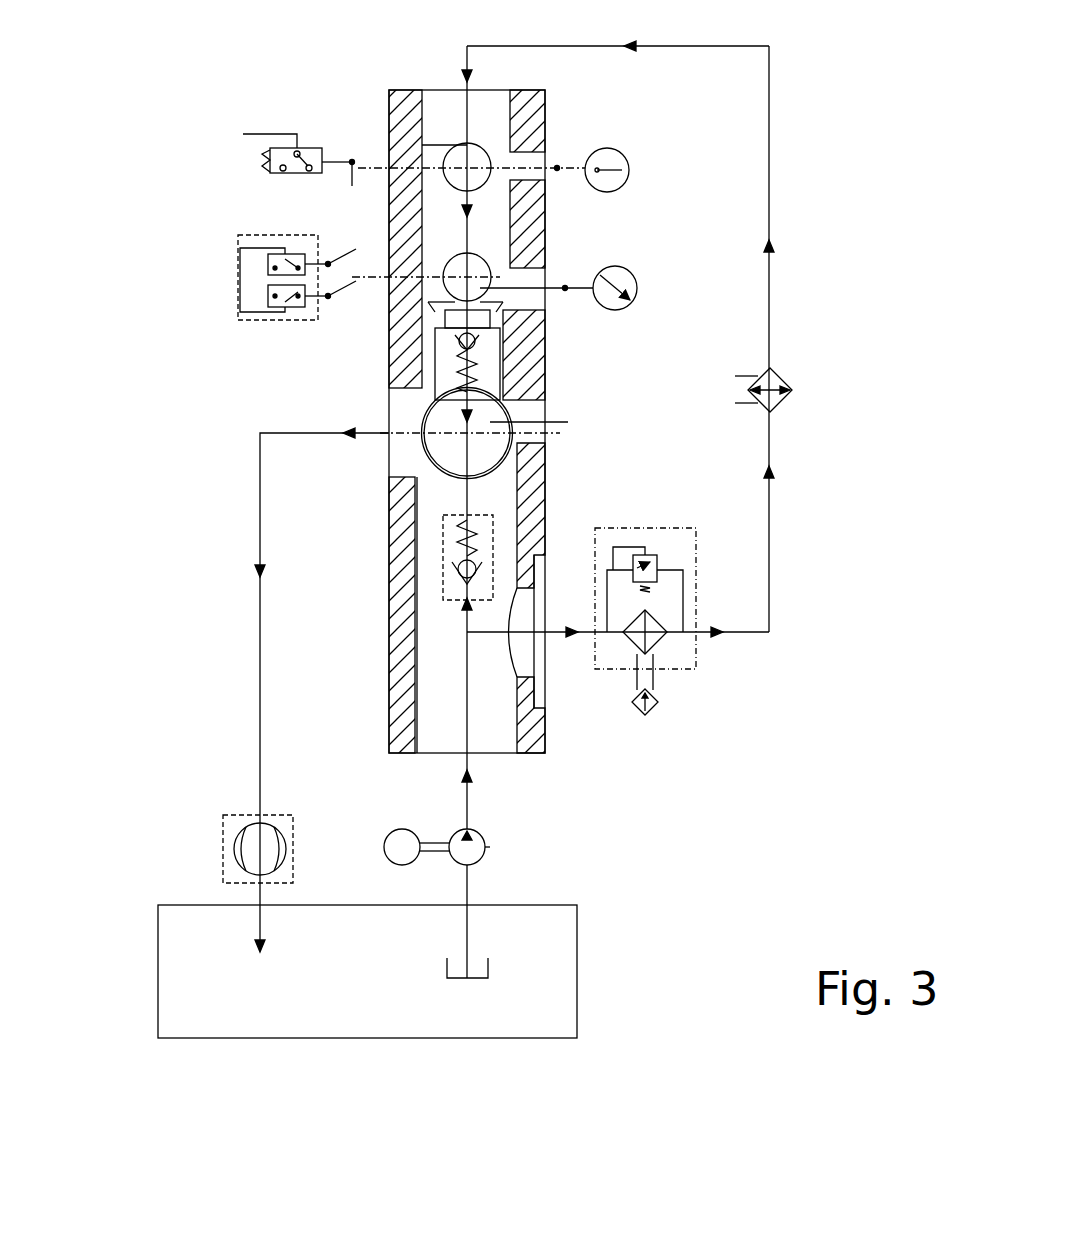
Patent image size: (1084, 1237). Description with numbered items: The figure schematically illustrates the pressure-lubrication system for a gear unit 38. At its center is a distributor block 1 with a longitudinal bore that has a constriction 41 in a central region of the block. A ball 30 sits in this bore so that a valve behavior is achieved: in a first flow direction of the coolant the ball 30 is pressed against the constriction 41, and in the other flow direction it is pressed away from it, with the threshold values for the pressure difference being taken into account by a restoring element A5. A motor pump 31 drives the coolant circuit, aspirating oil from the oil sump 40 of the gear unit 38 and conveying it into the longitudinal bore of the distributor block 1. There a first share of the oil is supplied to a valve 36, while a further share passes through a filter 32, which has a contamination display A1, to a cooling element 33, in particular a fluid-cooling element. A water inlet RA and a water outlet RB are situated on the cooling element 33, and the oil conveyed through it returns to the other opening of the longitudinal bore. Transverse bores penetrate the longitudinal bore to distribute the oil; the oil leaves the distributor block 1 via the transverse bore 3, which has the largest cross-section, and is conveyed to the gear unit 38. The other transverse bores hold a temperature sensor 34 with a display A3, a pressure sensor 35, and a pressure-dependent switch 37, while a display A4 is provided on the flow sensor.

The distributor block 1 is at (400, 102).
The transverse bore 3 is at (389, 450).
The ball 30 is at (484, 455).
The motor pump 31 is at (385, 832).
The filter 32 is at (697, 668).
The cooling element 33 is at (779, 369).
The temperature sensor 34 is at (623, 152).
The pressure sensor 35 is at (627, 270).
The valve 36 is at (445, 555).
The pressure-dependent switch 37 is at (258, 152).
The gear unit 38 is at (372, 1021).
The oil sump 40 is at (490, 962).
The constriction 41 is at (508, 393).
The contamination display A1 is at (649, 712).
The display A3 is at (238, 290).
The display A4 is at (228, 875).
The restoring element A5 is at (389, 364).
The water inlet RA is at (735, 376).
The water outlet RB is at (738, 404).